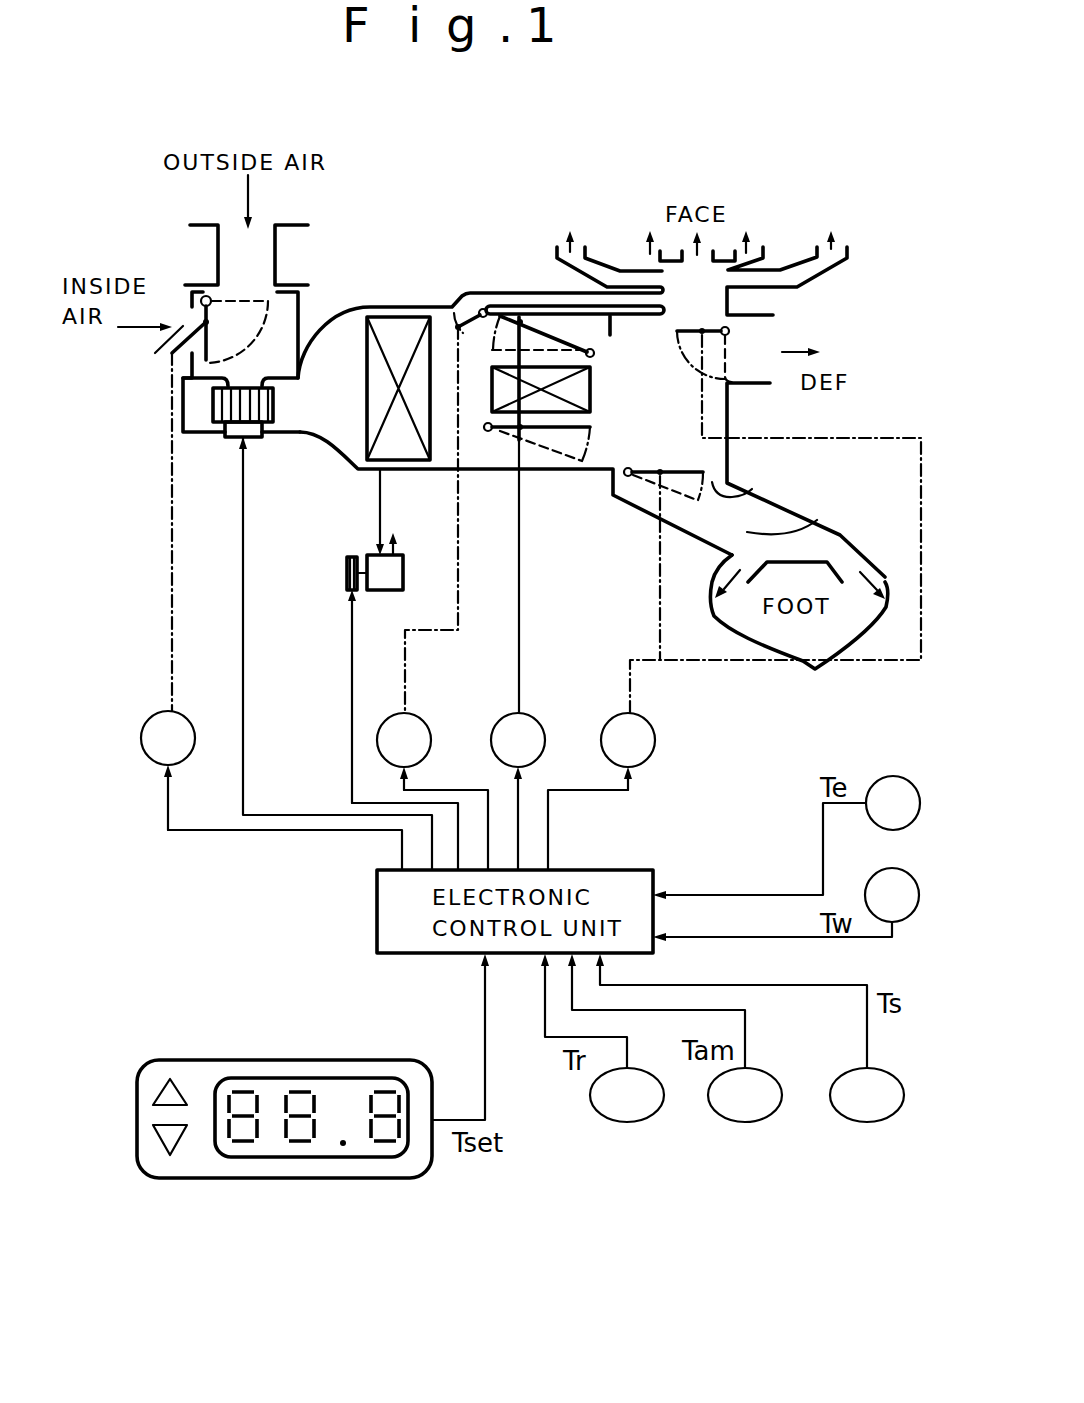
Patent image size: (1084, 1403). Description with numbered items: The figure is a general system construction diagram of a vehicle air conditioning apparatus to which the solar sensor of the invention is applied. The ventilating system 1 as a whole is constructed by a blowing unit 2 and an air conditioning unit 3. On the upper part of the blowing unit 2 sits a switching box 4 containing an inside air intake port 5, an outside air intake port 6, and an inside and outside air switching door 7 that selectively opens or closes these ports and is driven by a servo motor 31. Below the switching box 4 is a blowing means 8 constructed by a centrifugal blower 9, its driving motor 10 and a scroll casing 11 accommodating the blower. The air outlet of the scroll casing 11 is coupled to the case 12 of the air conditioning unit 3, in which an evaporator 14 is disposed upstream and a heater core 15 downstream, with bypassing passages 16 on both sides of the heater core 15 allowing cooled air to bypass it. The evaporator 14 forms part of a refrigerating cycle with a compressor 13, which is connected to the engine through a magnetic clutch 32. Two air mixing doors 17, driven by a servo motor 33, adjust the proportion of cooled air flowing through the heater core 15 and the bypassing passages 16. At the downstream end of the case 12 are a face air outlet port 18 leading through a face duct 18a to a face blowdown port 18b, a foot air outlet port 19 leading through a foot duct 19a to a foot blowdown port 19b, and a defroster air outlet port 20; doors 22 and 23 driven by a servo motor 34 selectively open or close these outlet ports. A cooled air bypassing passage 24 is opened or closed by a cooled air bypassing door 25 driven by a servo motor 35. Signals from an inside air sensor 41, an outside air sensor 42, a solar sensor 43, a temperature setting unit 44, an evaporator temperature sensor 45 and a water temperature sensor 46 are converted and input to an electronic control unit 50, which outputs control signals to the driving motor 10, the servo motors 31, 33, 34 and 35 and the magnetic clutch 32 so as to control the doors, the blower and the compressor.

The ventilating system 1 is at (373, 297).
The blowing unit 2 is at (208, 446).
The air conditioning unit 3 is at (425, 297).
The switching box 4 is at (300, 327).
The inside air intake port 5 is at (159, 353).
The outside air intake port 6 is at (250, 277).
The inside and outside air switching door 7 is at (202, 313).
The blowing means 8 is at (287, 448).
The centrifugal blower 9 is at (213, 408).
The driving motor 10 is at (259, 440).
The scroll casing 11 is at (183, 400).
The case 12 is at (433, 471).
The compressor 13 is at (400, 572).
The evaporator 14 is at (403, 447).
The heater core 15 is at (592, 400).
The bypassing passages 16 is at (562, 322).
The air mixing doors 17 is at (567, 434).
The face air outlet port 18 is at (700, 305).
The face duct 18a is at (812, 278).
The face blowdown port 18b is at (845, 246).
The foot air outlet port 19 is at (752, 490).
The foot duct 19a is at (817, 520).
The foot blowdown port 19b is at (775, 575).
The defroster air outlet port 20 is at (732, 362).
The door 22 is at (673, 336).
The door 23 is at (730, 447).
The cooled air bypassing passage 24 is at (515, 288).
The cooled air bypassing door 25 is at (465, 295).
The servo motor 31 is at (195, 722).
The magnetic clutch 32 is at (345, 583).
The servo motor 33 is at (545, 732).
The servo motor 34 is at (658, 732).
The servo motor 35 is at (432, 732).
The inside air sensor 41 is at (645, 1120).
The outside air sensor 42 is at (767, 1122).
The solar sensor 43 is at (877, 1122).
The temperature setting unit 44 is at (378, 1180).
The evaporator temperature sensor 45 is at (885, 776).
The water temperature sensor 46 is at (872, 878).
The electronic control unit 50 is at (618, 870).